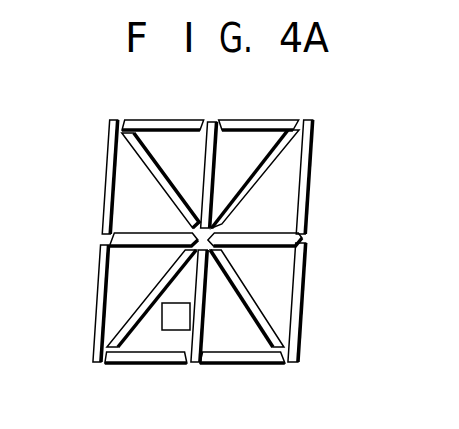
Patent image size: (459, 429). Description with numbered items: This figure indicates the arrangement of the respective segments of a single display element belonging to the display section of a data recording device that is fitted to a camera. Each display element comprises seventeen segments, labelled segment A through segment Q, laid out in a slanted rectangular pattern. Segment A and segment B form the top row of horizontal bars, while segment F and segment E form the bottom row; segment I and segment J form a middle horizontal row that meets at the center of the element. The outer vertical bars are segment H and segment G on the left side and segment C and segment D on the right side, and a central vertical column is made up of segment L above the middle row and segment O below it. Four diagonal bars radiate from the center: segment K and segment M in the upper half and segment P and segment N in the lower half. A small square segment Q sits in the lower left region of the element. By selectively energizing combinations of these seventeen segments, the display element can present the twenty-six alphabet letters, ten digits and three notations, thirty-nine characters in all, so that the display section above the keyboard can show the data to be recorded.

The segment A is at (177, 118).
The segment B is at (262, 118).
The segment C is at (311, 166).
The segment D is at (308, 283).
The segment E is at (228, 363).
The segment F is at (156, 364).
The segment G is at (96, 288).
The segment H is at (101, 210).
The segment I is at (162, 233).
The segment J is at (260, 232).
The segment K is at (157, 187).
The segment L is at (214, 191).
The segment M is at (263, 173).
The segment N is at (242, 281).
The segment O is at (207, 320).
The segment P is at (152, 290).
The segment Q is at (176, 316).